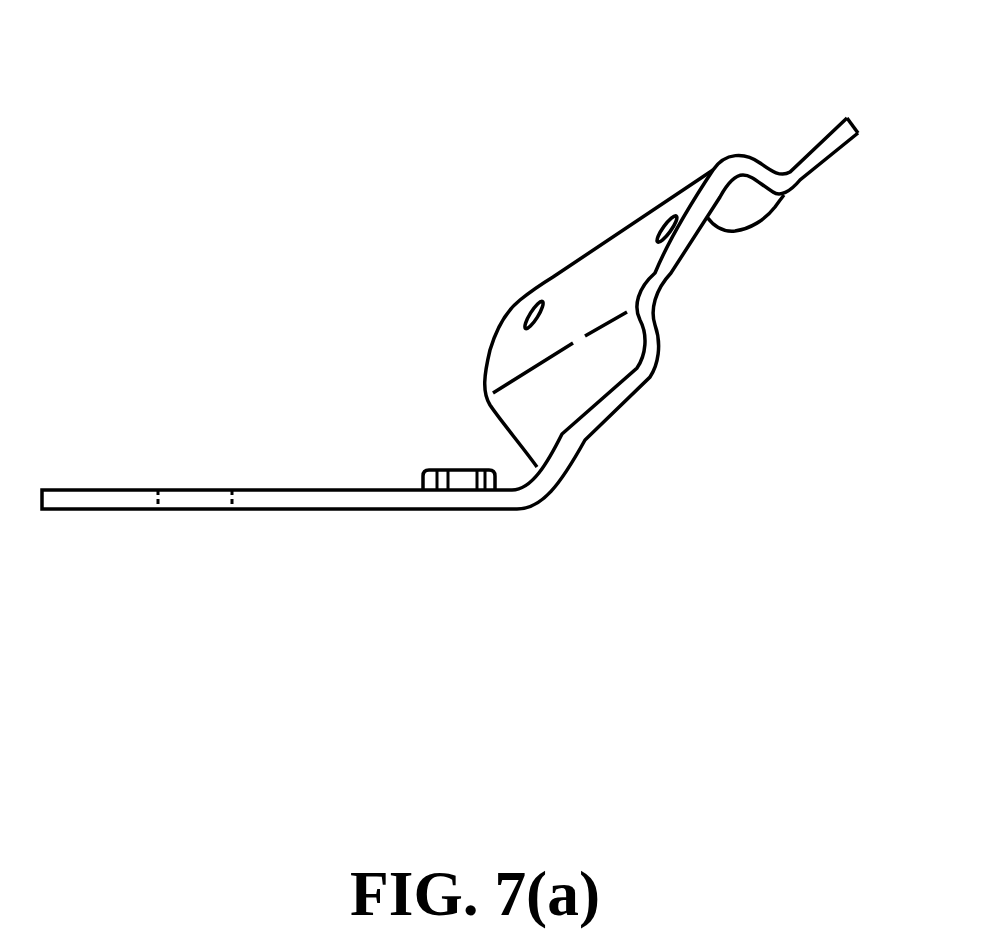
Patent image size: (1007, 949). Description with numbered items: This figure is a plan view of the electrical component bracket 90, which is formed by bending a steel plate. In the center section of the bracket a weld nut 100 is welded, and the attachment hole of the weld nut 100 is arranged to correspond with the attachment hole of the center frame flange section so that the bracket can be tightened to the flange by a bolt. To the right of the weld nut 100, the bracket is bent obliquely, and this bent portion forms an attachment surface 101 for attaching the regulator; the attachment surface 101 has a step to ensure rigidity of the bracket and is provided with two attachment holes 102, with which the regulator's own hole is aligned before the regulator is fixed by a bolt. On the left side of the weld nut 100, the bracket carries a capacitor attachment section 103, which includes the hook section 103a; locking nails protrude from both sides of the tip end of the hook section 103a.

The electrical component bracket 90 is at (705, 137).
The weld nut 100 is at (463, 470).
The attachment surface 101 is at (598, 287).
The attachment hole 102 is at (528, 307).
The capacitor attachment section 103 is at (105, 482).
The hook section 103a is at (247, 488).